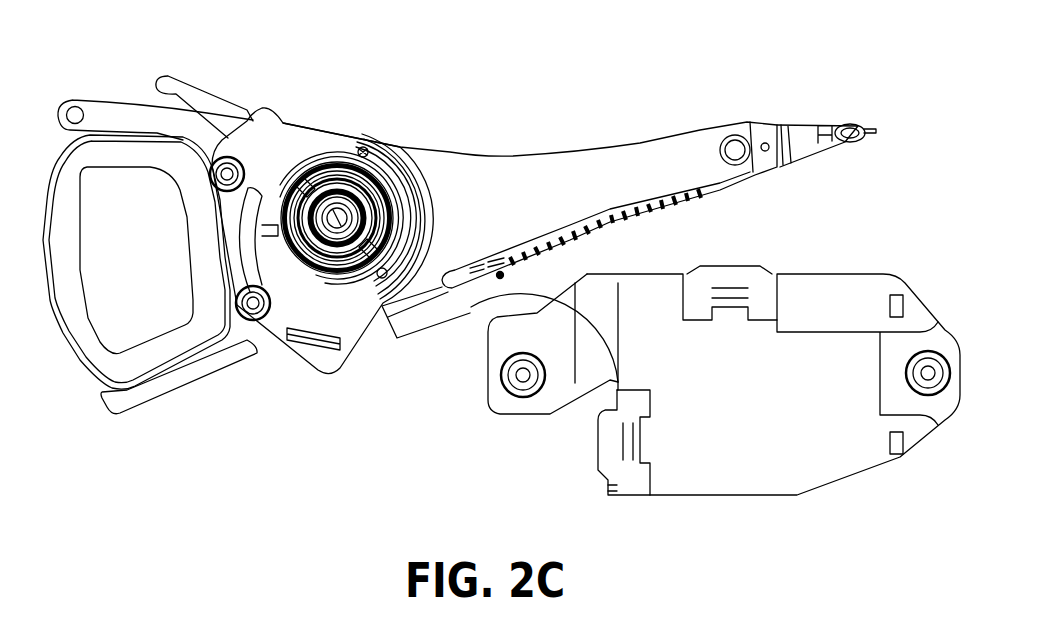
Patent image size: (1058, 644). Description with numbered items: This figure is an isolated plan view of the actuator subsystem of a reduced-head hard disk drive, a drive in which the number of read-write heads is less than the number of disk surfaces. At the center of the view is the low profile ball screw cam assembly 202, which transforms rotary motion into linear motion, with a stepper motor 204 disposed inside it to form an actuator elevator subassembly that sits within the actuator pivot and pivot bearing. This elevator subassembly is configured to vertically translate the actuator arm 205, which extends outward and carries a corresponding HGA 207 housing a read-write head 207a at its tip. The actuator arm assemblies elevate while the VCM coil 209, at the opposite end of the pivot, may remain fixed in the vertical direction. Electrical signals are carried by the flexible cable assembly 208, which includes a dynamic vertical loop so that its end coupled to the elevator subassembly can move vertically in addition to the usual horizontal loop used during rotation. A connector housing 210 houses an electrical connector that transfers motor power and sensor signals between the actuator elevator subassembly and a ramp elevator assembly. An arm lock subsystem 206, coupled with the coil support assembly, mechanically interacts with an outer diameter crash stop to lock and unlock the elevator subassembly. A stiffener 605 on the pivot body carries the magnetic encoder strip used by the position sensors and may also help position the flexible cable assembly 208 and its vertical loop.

The low profile ball screw cam assembly 202 is at (397, 163).
The stepper motor 204 is at (340, 212).
The actuator arm 205 is at (538, 160).
The arm lock subsystem 206 is at (197, 88).
The HGA 207 is at (800, 134).
The read-write head 207a is at (830, 141).
The flexible cable assembly 208 is at (420, 338).
The VCM coil 209 is at (185, 228).
The connector housing 210 is at (707, 283).
The stiffener 605 is at (312, 353).